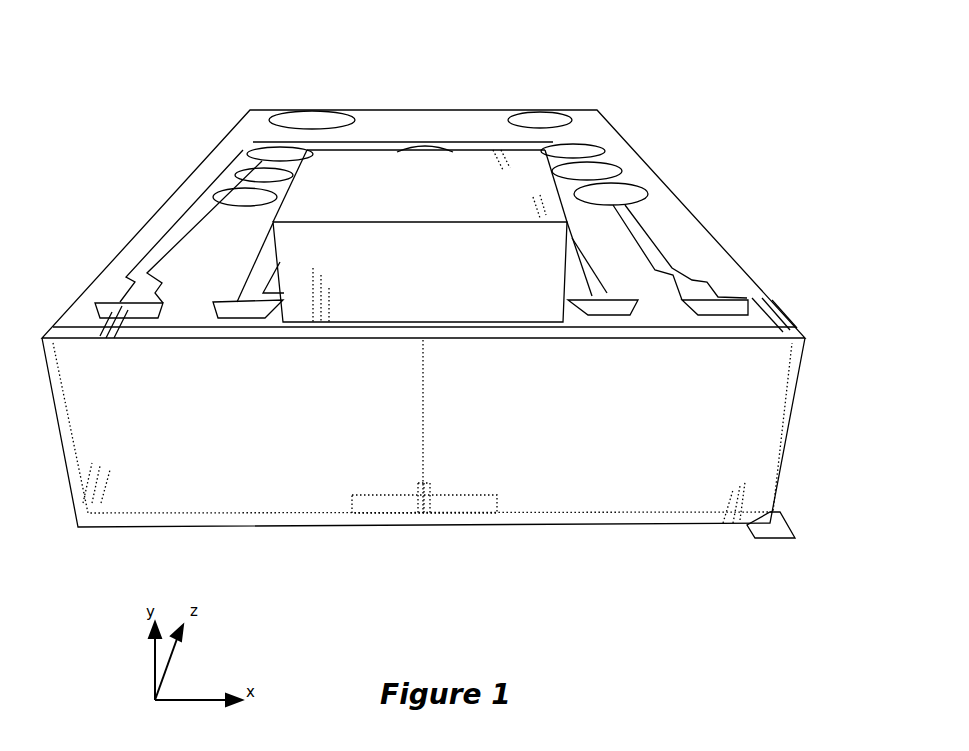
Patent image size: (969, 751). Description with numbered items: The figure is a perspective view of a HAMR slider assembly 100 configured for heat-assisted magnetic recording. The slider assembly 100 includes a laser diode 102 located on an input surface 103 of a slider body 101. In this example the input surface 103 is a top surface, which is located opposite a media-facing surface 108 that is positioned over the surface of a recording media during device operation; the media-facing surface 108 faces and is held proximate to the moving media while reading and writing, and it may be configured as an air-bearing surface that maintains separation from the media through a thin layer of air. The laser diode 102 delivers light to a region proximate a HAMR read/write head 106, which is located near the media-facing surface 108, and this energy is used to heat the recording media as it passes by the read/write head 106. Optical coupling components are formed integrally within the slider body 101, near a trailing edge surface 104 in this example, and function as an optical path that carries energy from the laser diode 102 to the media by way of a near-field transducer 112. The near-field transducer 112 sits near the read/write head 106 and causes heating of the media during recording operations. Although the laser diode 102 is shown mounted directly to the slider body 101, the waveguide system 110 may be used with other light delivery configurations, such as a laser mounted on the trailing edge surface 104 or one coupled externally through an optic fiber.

The HAMR slider assembly 100 is at (612, 52).
The slider body 101 is at (228, 135).
The laser diode 102 is at (383, 157).
The input surface 103 is at (107, 285).
The trailing edge surface 104 is at (138, 502).
The HAMR read/write head 106 is at (428, 513).
The media-facing surface 108 is at (785, 540).
The waveguide system 110 is at (424, 408).
The near-field transducer 112 is at (425, 513).